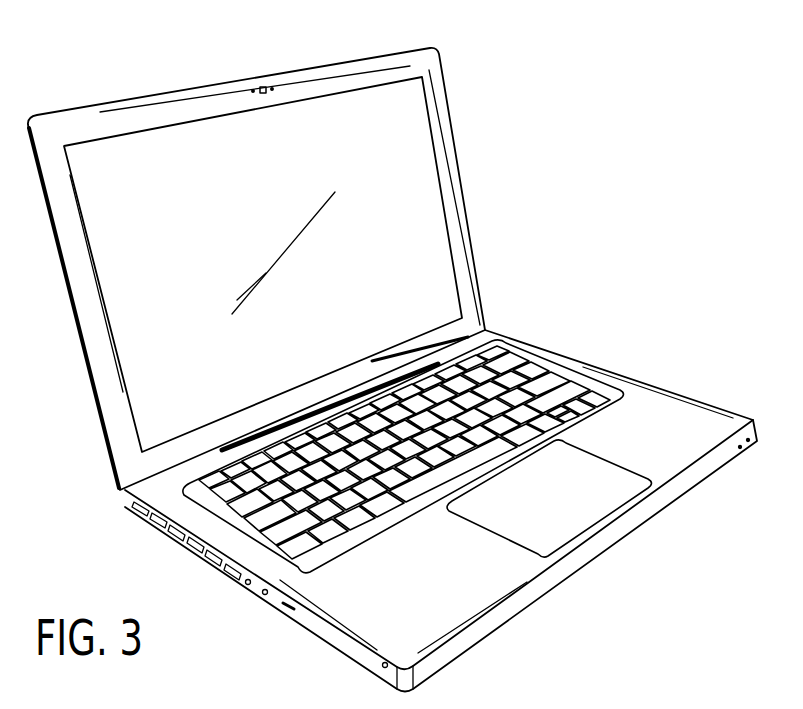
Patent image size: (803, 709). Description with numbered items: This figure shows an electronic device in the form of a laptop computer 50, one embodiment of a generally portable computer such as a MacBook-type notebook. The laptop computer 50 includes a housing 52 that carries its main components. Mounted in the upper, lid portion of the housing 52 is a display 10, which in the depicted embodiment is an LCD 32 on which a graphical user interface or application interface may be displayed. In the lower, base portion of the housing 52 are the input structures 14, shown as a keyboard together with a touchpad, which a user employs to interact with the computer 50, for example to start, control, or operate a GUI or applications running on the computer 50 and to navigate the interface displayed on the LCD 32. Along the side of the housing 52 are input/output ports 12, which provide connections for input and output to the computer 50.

The laptop computer 50 is at (178, 63).
The LCD 32 is at (416, 103).
The display 10 is at (423, 213).
The housing 52 is at (623, 378).
The input/output ports 12 is at (156, 528).
The input structures 14 is at (549, 375).